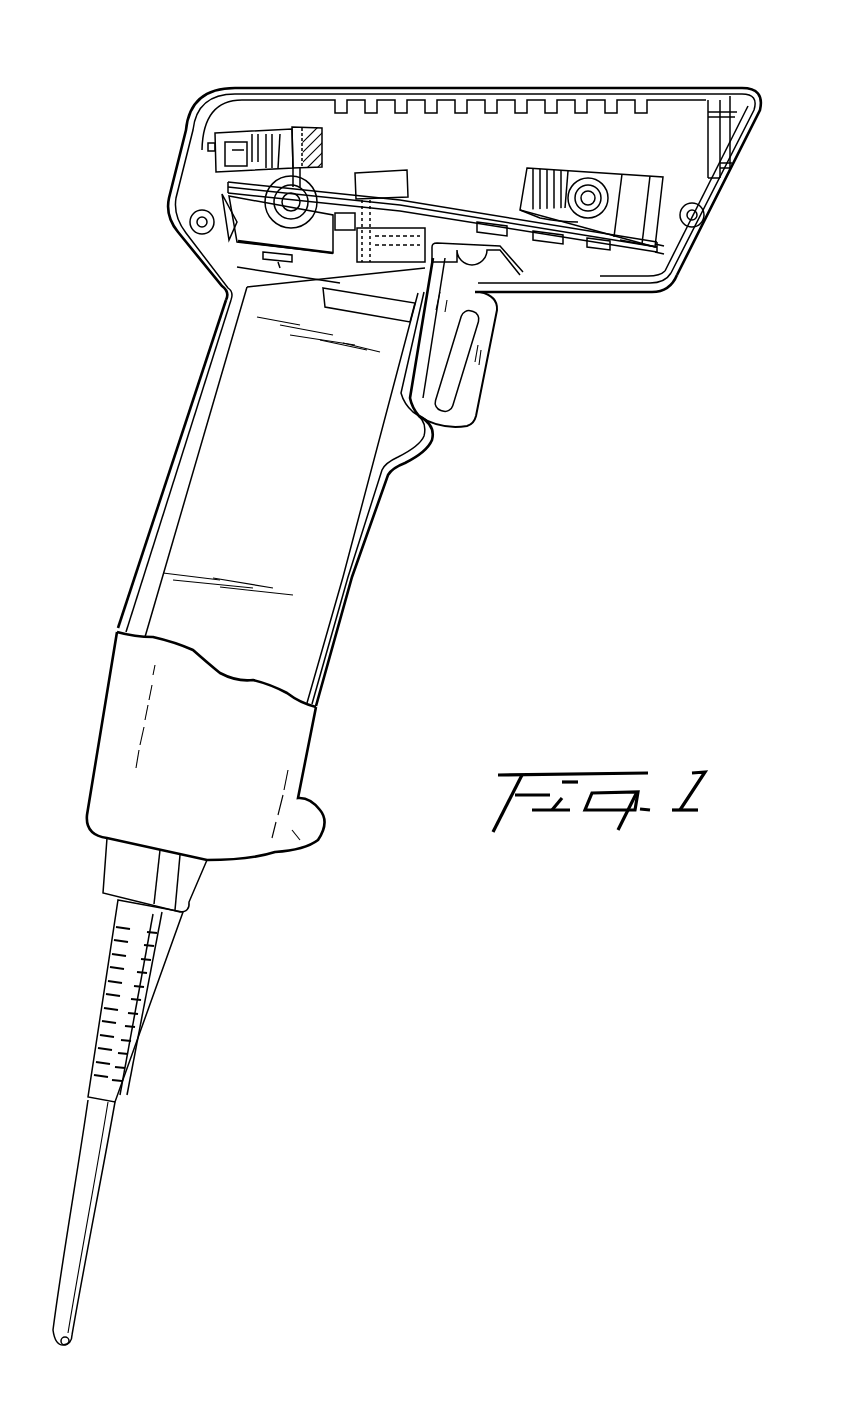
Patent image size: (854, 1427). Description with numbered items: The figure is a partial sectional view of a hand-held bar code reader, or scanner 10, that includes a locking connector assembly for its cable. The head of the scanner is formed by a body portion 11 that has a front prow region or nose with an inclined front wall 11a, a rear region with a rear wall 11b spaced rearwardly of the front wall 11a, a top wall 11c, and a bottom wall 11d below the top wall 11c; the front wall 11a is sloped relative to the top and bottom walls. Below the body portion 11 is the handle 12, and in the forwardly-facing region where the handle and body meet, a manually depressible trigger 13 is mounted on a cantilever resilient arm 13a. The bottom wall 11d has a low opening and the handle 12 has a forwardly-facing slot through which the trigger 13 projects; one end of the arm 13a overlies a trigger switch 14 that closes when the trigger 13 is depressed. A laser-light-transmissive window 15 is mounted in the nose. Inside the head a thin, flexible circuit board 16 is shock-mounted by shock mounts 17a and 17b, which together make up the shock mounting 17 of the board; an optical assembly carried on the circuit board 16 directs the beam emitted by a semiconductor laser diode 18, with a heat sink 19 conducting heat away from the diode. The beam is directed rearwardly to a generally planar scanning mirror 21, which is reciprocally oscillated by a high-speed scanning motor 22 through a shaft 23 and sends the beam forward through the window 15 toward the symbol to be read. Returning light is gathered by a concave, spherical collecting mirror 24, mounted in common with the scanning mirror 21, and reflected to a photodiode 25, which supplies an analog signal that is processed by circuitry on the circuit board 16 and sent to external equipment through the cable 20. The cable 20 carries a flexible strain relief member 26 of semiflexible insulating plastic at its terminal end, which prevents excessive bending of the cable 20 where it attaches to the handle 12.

The scanner 10 is at (660, 420).
The body portion 11 is at (447, 147).
The inclined front wall 11a is at (655, 228).
The rear wall 11b is at (185, 143).
The top wall 11c is at (440, 90).
The bottom wall 11d is at (520, 290).
The handle 12 is at (229, 559).
The trigger 13 is at (470, 432).
The cantilever resilient arm 13a is at (440, 240).
The trigger switch 14 is at (393, 230).
The window 15 is at (722, 143).
The circuit board 16 is at (648, 256).
The strain relief connector 17 is at (173, 895).
The shock mount 17a is at (282, 203).
The shock mount 17b is at (592, 195).
The semiconductor laser diode 18 is at (630, 240).
The heat sink 19 is at (690, 262).
The cable 20 is at (75, 1213).
The scanning mirror 21 is at (300, 127).
The scanning motor 22 is at (240, 242).
The shaft 23 is at (257, 268).
The collecting mirror 24 is at (320, 128).
The photodiode 25 is at (580, 233).
The strain relief member 26 is at (150, 990).